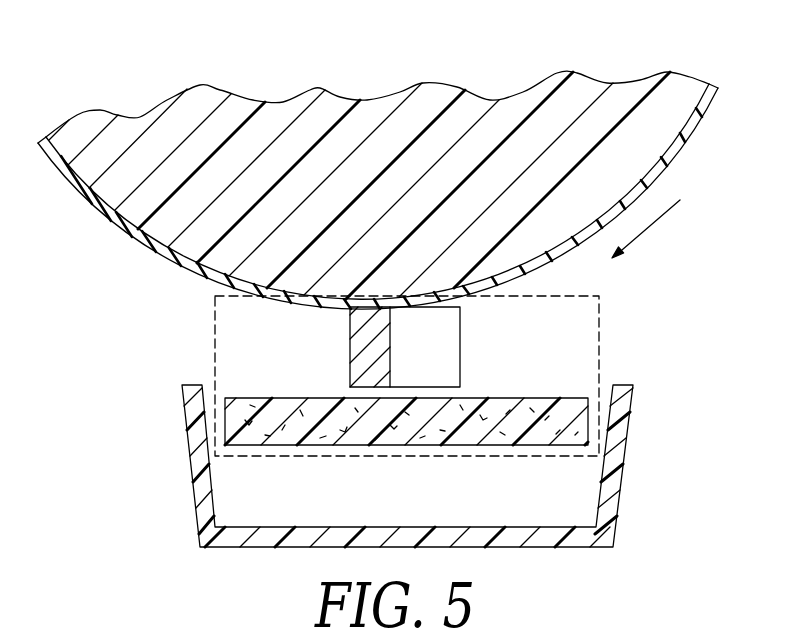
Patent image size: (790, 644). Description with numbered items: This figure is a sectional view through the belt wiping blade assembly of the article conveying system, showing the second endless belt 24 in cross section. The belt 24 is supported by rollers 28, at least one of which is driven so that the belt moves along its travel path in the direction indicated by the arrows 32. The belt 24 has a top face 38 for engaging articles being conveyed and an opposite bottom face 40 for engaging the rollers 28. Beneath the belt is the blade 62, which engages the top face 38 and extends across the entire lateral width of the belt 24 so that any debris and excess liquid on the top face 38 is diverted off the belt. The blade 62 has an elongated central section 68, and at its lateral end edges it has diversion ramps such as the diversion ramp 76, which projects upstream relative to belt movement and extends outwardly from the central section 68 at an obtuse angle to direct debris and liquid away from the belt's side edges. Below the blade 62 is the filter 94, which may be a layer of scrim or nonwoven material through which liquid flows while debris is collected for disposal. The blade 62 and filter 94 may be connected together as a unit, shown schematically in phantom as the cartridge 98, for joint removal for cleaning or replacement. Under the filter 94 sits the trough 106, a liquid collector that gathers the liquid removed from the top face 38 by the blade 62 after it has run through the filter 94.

The second endless belt 24 is at (406, 162).
The rollers 28 is at (387, 108).
The arrows 32 is at (663, 220).
The top face 38 is at (70, 182).
The bottom face 40 is at (92, 172).
The blade 62 is at (380, 347).
The elongated central section 68 is at (350, 365).
The diversion ramp 76 is at (433, 343).
The filter 94 is at (560, 398).
The cartridge 98 is at (601, 309).
The trough 106 is at (613, 472).